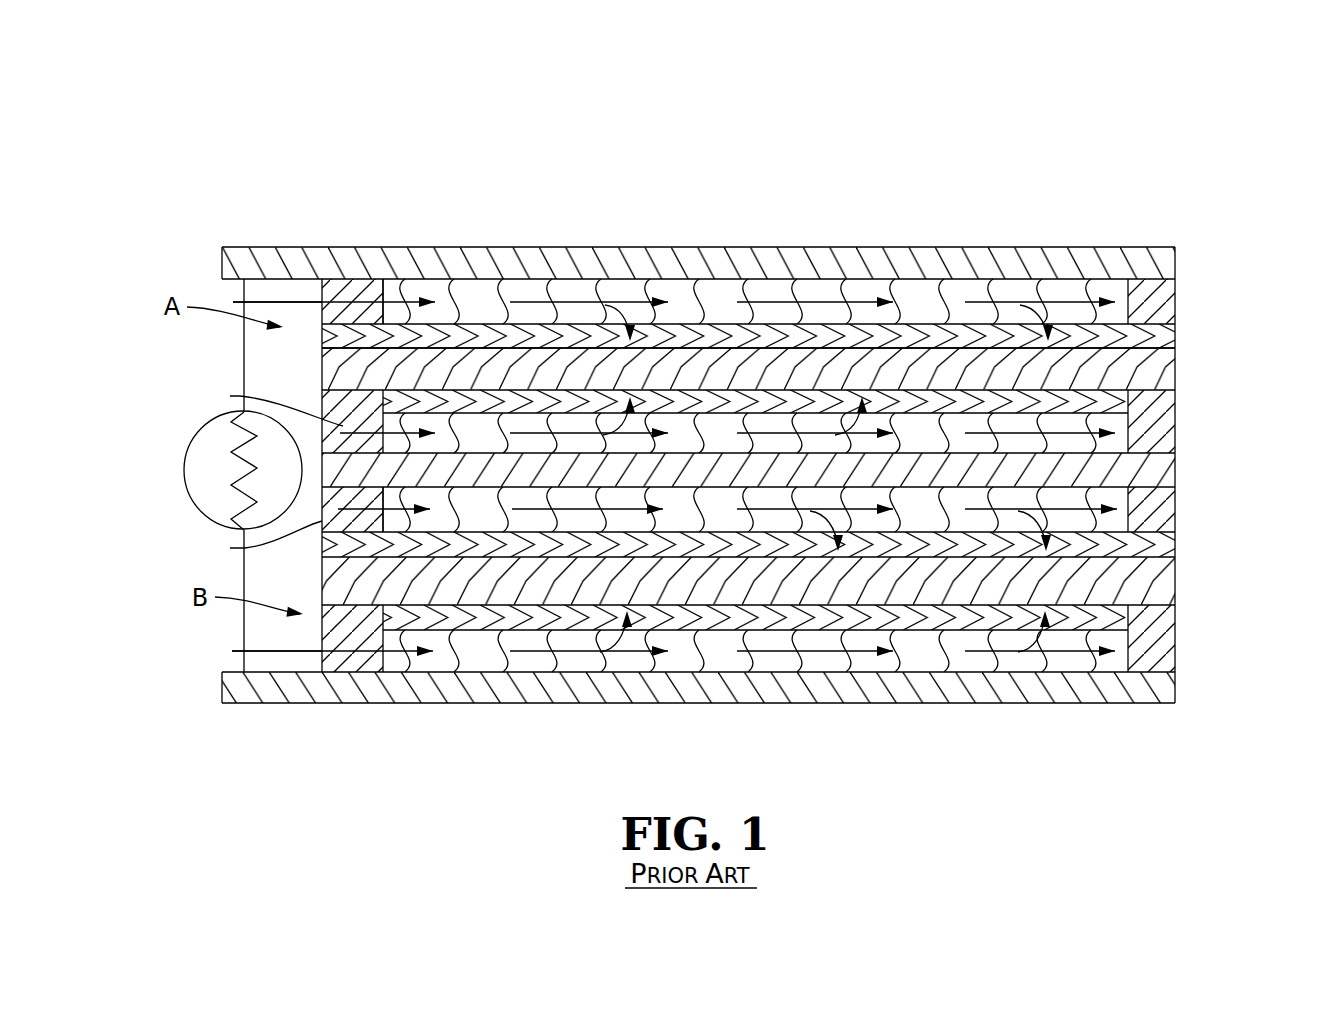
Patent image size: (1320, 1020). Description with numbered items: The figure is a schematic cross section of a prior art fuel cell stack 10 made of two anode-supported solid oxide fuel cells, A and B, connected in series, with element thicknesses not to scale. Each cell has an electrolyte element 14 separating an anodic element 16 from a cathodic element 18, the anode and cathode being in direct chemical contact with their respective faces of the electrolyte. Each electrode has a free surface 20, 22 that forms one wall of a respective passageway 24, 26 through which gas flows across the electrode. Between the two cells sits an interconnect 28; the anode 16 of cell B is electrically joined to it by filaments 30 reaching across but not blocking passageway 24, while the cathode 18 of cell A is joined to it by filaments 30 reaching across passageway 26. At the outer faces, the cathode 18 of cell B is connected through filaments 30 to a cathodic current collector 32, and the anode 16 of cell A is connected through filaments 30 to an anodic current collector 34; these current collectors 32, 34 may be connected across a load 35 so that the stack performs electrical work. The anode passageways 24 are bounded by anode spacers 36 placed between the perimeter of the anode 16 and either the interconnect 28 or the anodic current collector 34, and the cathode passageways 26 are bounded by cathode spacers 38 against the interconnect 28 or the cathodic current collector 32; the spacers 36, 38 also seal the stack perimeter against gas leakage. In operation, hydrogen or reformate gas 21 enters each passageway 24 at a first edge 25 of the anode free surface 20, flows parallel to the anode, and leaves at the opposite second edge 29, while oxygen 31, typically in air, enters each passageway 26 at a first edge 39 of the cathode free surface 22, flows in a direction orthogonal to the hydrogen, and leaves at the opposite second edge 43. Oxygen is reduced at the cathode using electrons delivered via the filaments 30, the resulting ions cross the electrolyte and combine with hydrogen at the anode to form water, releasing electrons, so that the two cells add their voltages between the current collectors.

The fuel cell stack 10 is at (1035, 200).
The electrolyte element 14 is at (1167, 360).
The anodic element 16 is at (1157, 340).
The cathodic element 18 is at (1113, 398).
The anode free surface 20 is at (1128, 327).
The hydrogen or reformate gas 21 is at (267, 297).
The cathode free surface 22 is at (1115, 430).
The passageway 24 is at (487, 297).
The first edge 25 is at (322, 348).
The passageway 26 is at (872, 440).
The interconnect 28 is at (1143, 478).
The second edge 29 is at (1135, 322).
The filaments 30 is at (750, 452).
The oxygen 31 is at (263, 398).
The cathodic current collector 32 is at (437, 693).
The anodic current collector 34 is at (377, 257).
The load 35 is at (243, 468).
The anode spacers 36 is at (320, 278).
The cathode spacers 38 is at (340, 398).
The first edge 39 is at (337, 507).
The second edge 43 is at (1137, 463).